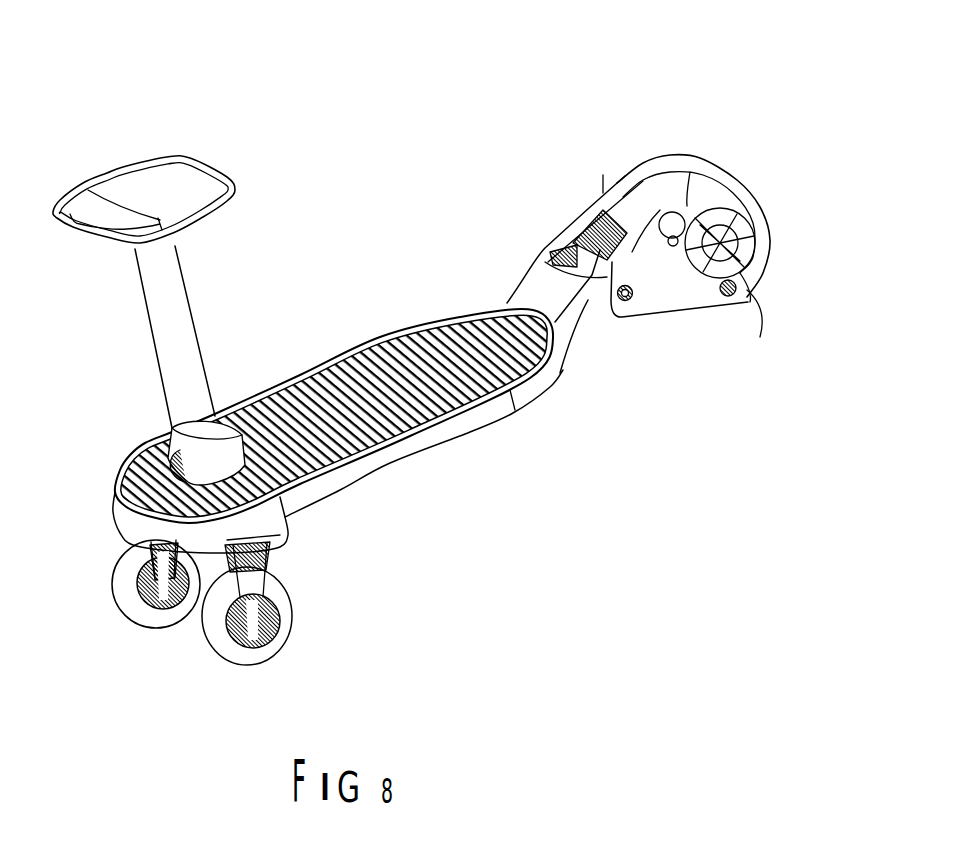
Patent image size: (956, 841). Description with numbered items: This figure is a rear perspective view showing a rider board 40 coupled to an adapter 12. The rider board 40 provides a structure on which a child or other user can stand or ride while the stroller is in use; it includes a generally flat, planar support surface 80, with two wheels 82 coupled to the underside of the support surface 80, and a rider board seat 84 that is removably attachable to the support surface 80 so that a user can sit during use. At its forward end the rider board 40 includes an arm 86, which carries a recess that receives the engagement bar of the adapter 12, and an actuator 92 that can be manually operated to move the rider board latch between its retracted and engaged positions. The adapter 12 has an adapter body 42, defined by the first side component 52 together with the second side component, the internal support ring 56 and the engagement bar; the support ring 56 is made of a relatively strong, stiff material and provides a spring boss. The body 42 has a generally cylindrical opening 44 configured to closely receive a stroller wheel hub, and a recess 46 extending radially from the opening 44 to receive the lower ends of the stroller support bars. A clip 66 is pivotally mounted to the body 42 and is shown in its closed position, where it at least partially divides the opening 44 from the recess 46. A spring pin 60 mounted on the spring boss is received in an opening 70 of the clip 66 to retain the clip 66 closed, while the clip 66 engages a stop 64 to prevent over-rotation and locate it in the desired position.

The rider board 40 is at (431, 190).
The rider board seat 84 is at (137, 183).
The support surface 80 is at (377, 337).
The wheel 82 is at (130, 617).
The arm 86 is at (560, 262).
The actuator 92 is at (577, 230).
The internal support ring 56 is at (620, 183).
The adapter body 42 is at (647, 162).
The first side component 52 is at (665, 160).
The adapter 12 is at (675, 170).
The recess 46 is at (712, 168).
The spring pin 60 is at (735, 178).
The clip 66 is at (748, 197).
The opening of the clip 70 is at (687, 292).
The stop 64 is at (677, 296).
The opening 44 is at (753, 290).